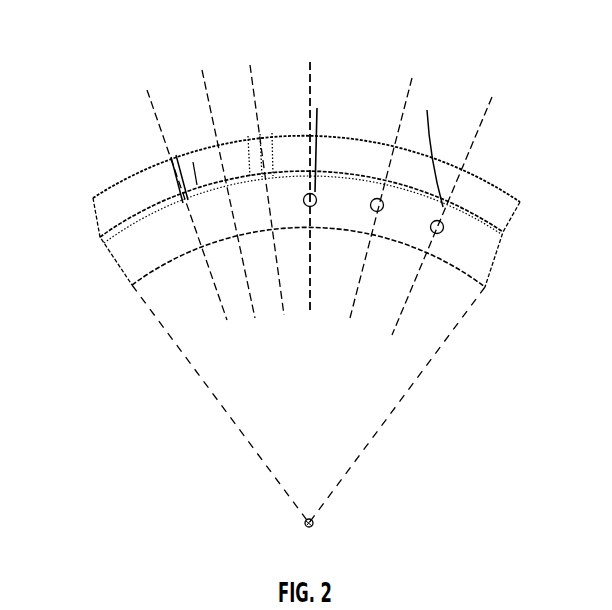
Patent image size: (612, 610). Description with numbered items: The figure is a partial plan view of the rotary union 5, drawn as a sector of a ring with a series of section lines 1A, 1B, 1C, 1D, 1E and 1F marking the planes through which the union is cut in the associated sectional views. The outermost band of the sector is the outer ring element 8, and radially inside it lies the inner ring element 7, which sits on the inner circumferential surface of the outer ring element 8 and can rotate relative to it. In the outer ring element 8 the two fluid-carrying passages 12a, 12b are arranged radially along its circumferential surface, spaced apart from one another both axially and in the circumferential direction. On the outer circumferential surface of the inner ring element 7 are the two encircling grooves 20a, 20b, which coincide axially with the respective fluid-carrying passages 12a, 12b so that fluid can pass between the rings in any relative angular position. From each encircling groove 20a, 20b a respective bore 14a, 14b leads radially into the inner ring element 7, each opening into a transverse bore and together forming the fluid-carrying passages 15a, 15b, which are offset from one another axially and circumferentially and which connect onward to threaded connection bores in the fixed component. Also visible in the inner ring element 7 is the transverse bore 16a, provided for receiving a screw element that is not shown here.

The rotary union 5 is at (492, 167).
The inner ring element 7 is at (246, 247).
The outer ring element 8 is at (362, 150).
The fluid-carrying passage 12a is at (265, 138).
The fluid-carrying passage 12b is at (171, 157).
The bore 14a is at (427, 147).
The bore 14b is at (329, 139).
The fluid-carrying passage 15a is at (437, 237).
The fluid-carrying passage 15b is at (312, 208).
The transverse bore 16a is at (377, 213).
The encircling groove 20a is at (265, 185).
The encircling groove 20b is at (293, 201).
The section line 1A is at (440, 217).
The section line 1B is at (374, 201).
The section line 1C is at (304, 190).
The section line 1D is at (255, 192).
The section line 1E is at (216, 199).
The section line 1F is at (172, 214).